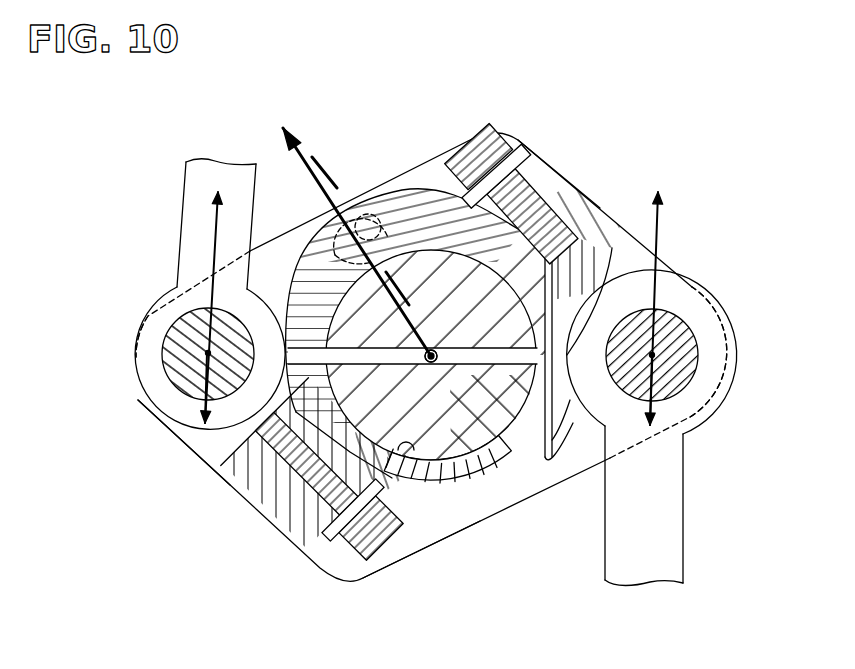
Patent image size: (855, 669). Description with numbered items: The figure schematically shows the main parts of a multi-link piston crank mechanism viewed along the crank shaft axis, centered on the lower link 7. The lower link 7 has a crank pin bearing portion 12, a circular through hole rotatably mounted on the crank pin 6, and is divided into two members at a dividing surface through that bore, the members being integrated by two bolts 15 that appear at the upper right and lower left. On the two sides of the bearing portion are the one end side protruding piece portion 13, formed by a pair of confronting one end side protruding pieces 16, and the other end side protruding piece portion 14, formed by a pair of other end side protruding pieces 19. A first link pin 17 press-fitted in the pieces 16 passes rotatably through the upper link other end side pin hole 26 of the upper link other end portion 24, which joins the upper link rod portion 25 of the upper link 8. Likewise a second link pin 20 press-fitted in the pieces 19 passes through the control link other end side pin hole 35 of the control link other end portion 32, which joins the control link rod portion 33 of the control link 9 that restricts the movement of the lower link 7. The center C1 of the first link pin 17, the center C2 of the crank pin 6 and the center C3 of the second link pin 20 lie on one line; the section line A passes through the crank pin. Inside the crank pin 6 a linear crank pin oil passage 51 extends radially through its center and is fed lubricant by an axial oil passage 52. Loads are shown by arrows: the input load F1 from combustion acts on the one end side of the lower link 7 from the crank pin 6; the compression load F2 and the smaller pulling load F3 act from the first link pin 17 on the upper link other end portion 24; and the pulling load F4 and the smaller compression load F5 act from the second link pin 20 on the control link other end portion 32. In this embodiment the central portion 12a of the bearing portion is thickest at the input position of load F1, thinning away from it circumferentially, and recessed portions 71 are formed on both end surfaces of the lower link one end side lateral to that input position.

The crank pin 6 is at (462, 500).
The lower link 7 is at (440, 150).
The upper link 8 is at (178, 205).
The control link 9 is at (690, 535).
The crank pin bearing portion 12 is at (418, 477).
The central portion of the crank pin bearing portion 12a is at (425, 218).
The one end side protruding piece portion 13 is at (180, 455).
The other end side protruding piece portion 14 is at (442, 553).
The bolt 15 is at (470, 150).
The one end side protruding piece 16 is at (270, 272).
The first link pin 17 is at (180, 330).
The other end side protruding piece 19 is at (580, 463).
The second link pin 20 is at (682, 325).
The upper link other end portion 24 is at (160, 312).
The upper link rod portion 25 is at (205, 180).
The upper link other end side pin hole 26 is at (172, 372).
The control link other end portion 32 is at (682, 292).
The control link rod portion 33 is at (688, 495).
The control link other end side pin hole 35 is at (696, 370).
The crank pin oil passage 51 is at (530, 430).
The axial oil passage 52 is at (428, 364).
The recessed portion 71 is at (372, 212).
The section line A- A is at (318, 176).
The center of the first link pin C1 is at (207, 353).
The center of the crank pin C2 is at (437, 363).
The center of the second link pin C3 is at (652, 355).
The input load F1 is at (300, 150).
The input load F2 is at (212, 248).
The input load F3 is at (186, 392).
The input load F4 is at (662, 222).
The input load F5 is at (690, 420).